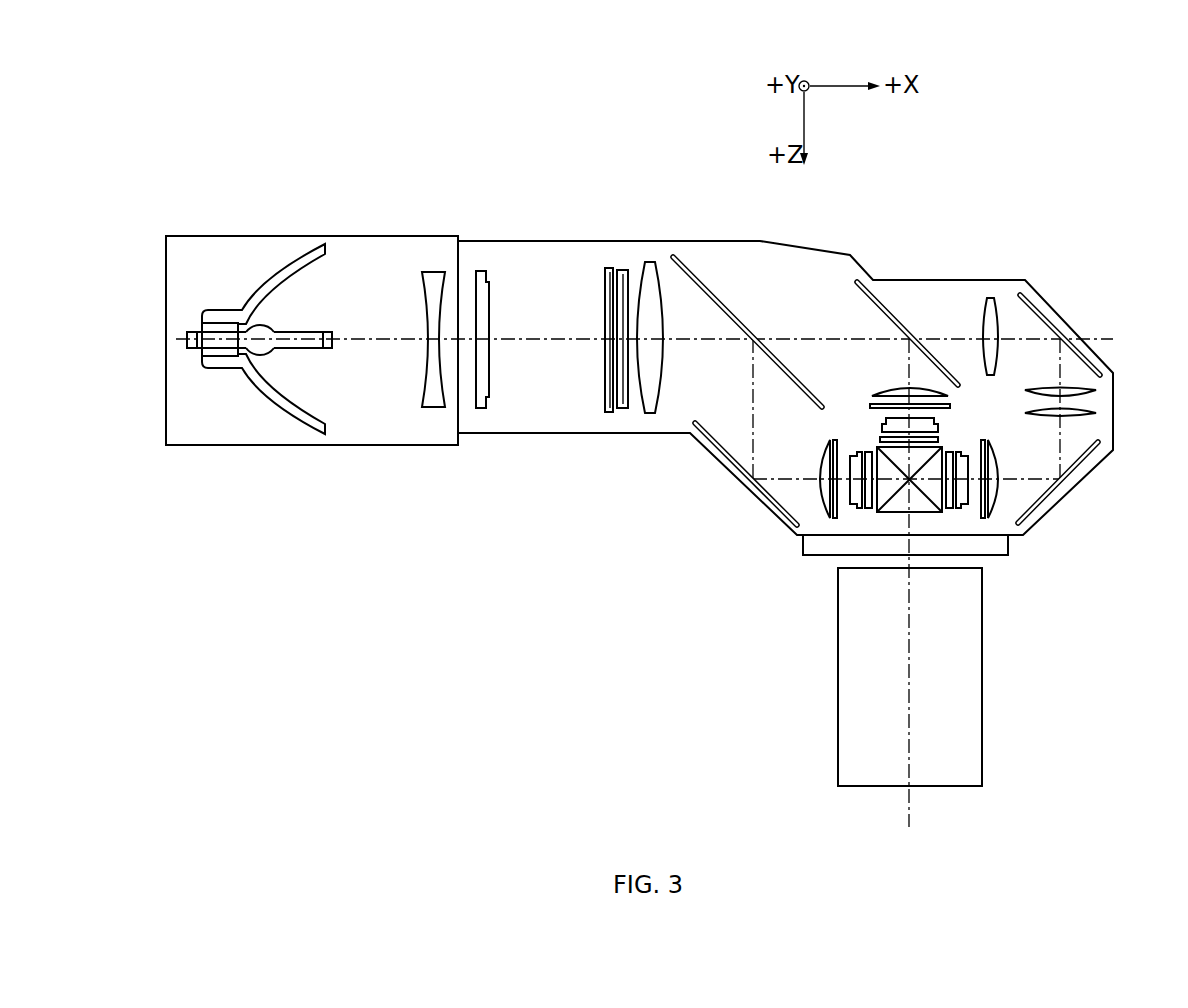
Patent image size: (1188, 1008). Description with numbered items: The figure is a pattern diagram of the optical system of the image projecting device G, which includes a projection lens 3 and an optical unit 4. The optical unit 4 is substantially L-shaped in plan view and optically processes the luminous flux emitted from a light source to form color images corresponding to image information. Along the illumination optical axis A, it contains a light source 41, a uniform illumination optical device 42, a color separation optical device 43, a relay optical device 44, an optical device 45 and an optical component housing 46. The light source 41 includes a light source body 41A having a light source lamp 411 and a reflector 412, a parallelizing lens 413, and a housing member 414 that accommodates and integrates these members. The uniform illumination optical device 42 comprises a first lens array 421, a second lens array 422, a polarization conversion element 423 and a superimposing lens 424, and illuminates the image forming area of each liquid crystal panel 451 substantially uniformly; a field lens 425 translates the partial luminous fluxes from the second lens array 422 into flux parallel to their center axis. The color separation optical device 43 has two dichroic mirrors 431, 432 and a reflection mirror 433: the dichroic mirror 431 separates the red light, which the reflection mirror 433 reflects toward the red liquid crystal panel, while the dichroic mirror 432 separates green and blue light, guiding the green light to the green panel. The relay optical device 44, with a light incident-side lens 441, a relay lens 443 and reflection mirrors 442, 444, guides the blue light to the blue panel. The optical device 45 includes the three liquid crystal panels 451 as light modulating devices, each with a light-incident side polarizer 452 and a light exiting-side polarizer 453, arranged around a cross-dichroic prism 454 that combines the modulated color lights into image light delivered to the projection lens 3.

The projection lens 3 is at (982, 700).
The optical unit 4 is at (608, 476).
The light source 41 is at (403, 101).
The light source body 41A is at (342, 139).
The light source lamp 411 is at (307, 328).
The reflector 412 is at (303, 256).
The parallelizing lens 413 is at (431, 275).
The housing member 414 is at (448, 236).
The uniform illumination optical device 42 is at (614, 197).
The first lens array 421 is at (488, 296).
The second lens array 422 is at (608, 268).
The polarization conversion element 423 is at (626, 270).
The superimposing lens 424 is at (655, 292).
The field lens 425 is at (883, 392).
The color separation optical device 43 is at (808, 266).
The dichroic mirror 431 is at (710, 290).
The dichroic mirror 432 is at (880, 305).
The reflection mirror 433 is at (713, 432).
The relay optical device 44 is at (1066, 300).
The light incident-side lens 441 is at (990, 298).
The reflection mirror 442 is at (1082, 353).
The relay lens 443 is at (1100, 413).
The reflection mirror 444 is at (1088, 458).
The optical device 45 is at (1015, 386).
The liquid crystal panel 451 is at (882, 427).
The light-incident side polarizer 452 is at (870, 406).
The light exiting-side polarizer 453 is at (940, 442).
The cross-dichroic prism 454 is at (918, 513).
The optical component housing 46 is at (920, 280).
The illumination optical axis A is at (528, 341).
The image projecting device G is at (975, 127).